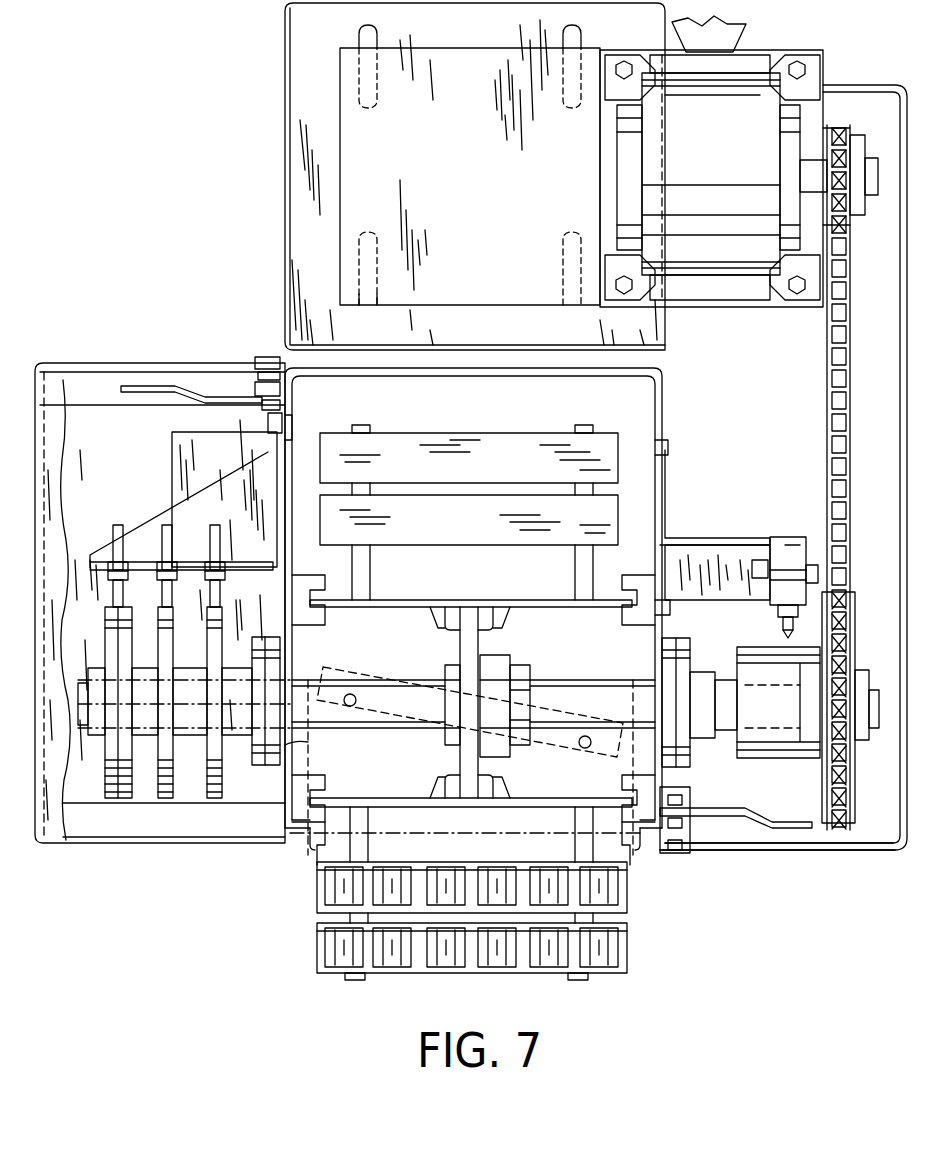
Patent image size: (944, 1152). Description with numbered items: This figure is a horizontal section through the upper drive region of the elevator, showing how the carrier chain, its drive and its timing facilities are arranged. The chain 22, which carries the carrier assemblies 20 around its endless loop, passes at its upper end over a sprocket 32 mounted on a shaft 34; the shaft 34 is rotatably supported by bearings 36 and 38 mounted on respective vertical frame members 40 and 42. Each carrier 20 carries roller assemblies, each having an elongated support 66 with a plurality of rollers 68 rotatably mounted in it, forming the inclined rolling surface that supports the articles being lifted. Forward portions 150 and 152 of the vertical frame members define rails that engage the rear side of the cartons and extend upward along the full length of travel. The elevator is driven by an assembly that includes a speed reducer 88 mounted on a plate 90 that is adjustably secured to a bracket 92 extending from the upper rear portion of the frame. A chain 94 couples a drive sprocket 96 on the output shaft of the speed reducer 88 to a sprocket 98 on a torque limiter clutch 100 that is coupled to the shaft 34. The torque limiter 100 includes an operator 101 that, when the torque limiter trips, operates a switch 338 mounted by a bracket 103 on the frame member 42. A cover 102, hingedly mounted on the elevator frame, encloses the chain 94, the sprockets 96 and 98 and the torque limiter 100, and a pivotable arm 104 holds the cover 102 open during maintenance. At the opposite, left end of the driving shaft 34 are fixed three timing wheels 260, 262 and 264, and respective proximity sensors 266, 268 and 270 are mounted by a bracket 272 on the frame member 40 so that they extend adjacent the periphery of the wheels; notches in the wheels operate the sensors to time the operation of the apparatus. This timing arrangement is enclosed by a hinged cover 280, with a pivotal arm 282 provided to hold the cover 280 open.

The carrier assembly 20 is at (542, 416).
The chain 22 is at (470, 622).
The sprocket 32 is at (482, 648).
The shaft 34 is at (590, 686).
The bearing 36 is at (268, 672).
The bearing 38 is at (685, 660).
The vertical frame member 40 is at (290, 745).
The vertical frame member 42 is at (665, 425).
The elongated support 66 is at (630, 945).
The roller 68 is at (338, 945).
The speed reducer 88 is at (645, 177).
The plate 90 is at (342, 218).
The bracket 92 is at (292, 160).
The chain 94 is at (848, 470).
The drive sprocket 96 is at (853, 200).
The sprocket 98 is at (850, 765).
The torque limiter clutch 100 is at (766, 745).
The operator 101 is at (782, 638).
The cover 102 is at (852, 850).
The bracket 103 is at (750, 566).
The pivotable arm 104 is at (772, 830).
The rail 150 is at (312, 852).
The rail 152 is at (640, 860).
The timing wheel 260 is at (112, 798).
The timing wheel 262 is at (170, 798).
The timing wheel 264 is at (222, 770).
The proximity sensor 266 is at (118, 525).
The proximity sensor 268 is at (172, 528).
The proximity sensor 270 is at (212, 538).
The bracket 272 is at (235, 566).
The hinged cover 280 is at (115, 363).
The pivotal arm 282 is at (215, 385).
The switch 338 is at (805, 537).